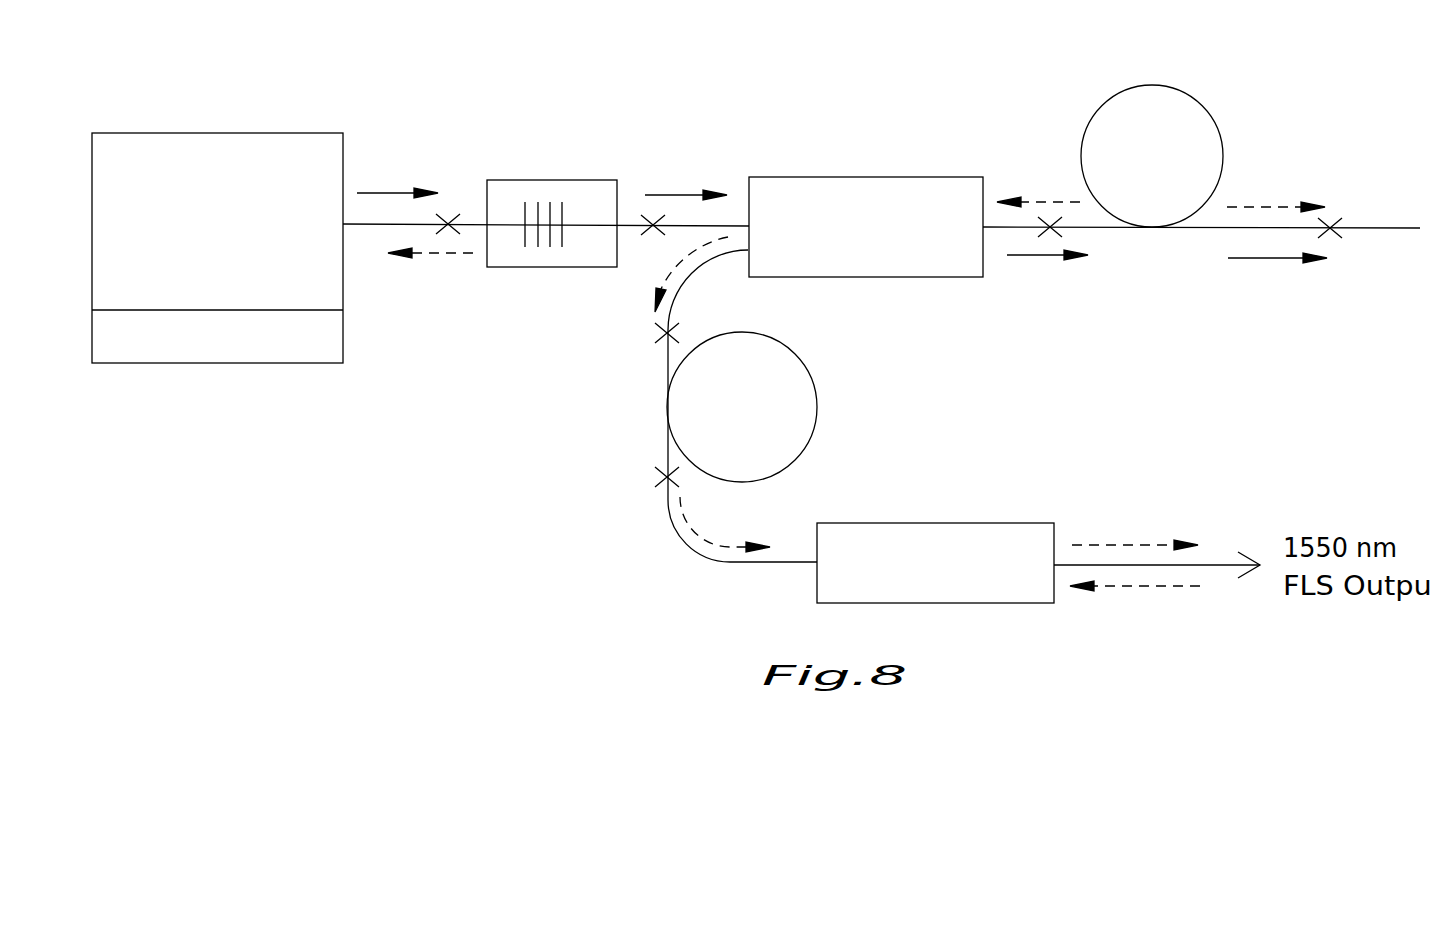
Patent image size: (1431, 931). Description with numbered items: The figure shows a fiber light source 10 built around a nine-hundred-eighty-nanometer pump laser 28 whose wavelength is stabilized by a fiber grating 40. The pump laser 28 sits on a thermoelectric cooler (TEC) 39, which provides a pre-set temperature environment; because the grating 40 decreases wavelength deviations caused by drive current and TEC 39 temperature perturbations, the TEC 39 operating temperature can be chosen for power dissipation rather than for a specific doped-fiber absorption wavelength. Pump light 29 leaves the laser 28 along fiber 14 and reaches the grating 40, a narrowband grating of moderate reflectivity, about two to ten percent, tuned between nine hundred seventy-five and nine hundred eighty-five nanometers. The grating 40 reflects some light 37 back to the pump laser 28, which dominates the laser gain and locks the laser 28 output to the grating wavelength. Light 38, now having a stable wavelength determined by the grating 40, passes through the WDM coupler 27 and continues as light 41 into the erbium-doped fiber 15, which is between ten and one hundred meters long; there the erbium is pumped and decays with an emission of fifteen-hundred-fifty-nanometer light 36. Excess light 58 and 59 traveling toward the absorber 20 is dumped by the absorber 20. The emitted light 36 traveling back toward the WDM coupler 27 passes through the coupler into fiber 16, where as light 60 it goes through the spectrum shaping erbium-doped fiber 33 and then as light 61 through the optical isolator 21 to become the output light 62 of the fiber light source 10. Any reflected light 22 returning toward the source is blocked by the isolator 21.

The fiber light source 10 is at (1301, 98).
The fiber 14 is at (363, 227).
The erbium-doped fiber 15 is at (1093, 112).
The fiber 16 is at (690, 270).
The absorber 20 is at (1355, 228).
The 1550 nm optical isolator 21 is at (905, 523).
The reflected light 22 is at (1128, 586).
The 980/1550 nm WDM coupler 27 is at (828, 177).
The 980 nm pump laser 28 is at (172, 133).
The pump light 29 is at (392, 193).
The spectrum shaping erbium-doped fiber 33 is at (817, 413).
The 1550 nm light 36 is at (1060, 200).
The reflected light 37 is at (433, 253).
The light 38 is at (683, 195).
The thermoelectric cooler (TEC) 39 is at (180, 363).
The fiber grating 40 is at (550, 267).
The light 41 is at (1030, 255).
The excess light 58 is at (1262, 207).
The excess light 59 is at (1238, 258).
The light 60 is at (676, 262).
The light 61 is at (713, 533).
The output light 62 is at (1102, 545).